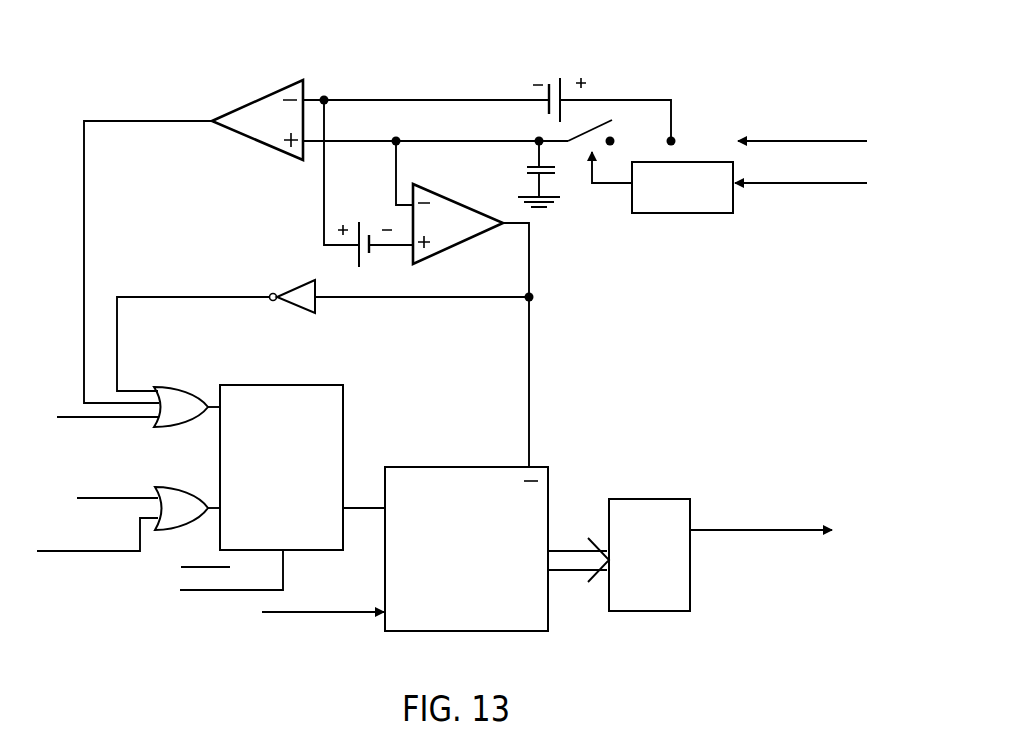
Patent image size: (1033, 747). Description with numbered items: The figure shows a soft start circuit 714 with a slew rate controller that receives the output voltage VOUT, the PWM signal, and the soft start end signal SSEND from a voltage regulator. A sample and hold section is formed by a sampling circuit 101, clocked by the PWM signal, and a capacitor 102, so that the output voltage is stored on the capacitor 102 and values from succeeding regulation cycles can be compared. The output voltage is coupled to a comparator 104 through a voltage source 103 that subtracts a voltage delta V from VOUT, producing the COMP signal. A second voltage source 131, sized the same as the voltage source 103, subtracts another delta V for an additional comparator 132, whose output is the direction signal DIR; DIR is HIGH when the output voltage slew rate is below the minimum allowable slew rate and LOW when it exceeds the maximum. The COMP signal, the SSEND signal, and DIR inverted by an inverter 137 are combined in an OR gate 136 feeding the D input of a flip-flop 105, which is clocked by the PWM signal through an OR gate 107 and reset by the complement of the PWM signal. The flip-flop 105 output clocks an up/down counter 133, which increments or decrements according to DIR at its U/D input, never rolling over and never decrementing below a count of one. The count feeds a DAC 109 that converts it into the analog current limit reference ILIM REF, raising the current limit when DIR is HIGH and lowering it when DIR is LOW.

The soft start circuit 714 is at (139, 58).
The comparator 104 is at (242, 107).
The voltage source 103 is at (584, 82).
The capacitor 102 is at (516, 174).
The sampling circuit 101 is at (678, 213).
The voltage source 131 is at (372, 251).
The comparator 132 is at (447, 250).
The inverter 137 is at (297, 285).
The OR gate 136 is at (168, 385).
The flip-flop 105 is at (255, 385).
The OR gate 107 is at (186, 488).
The up/down counter 133 is at (455, 467).
The DAC 109 is at (660, 498).